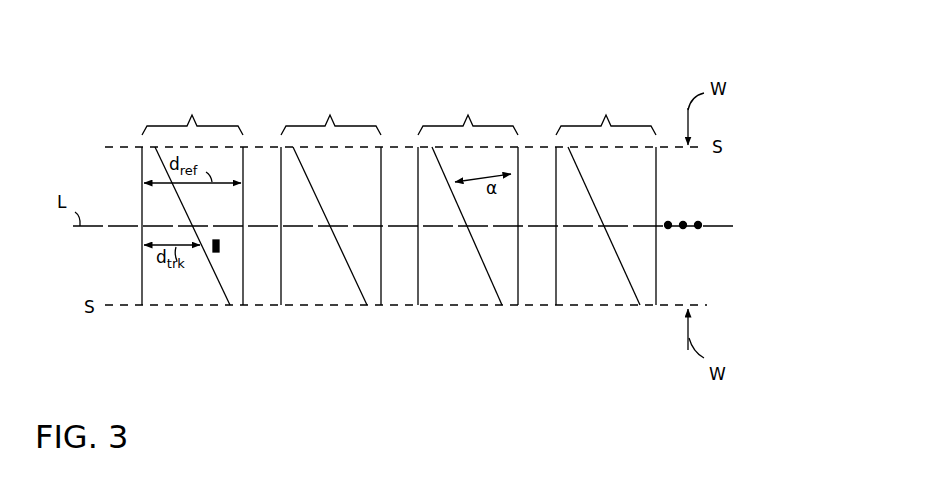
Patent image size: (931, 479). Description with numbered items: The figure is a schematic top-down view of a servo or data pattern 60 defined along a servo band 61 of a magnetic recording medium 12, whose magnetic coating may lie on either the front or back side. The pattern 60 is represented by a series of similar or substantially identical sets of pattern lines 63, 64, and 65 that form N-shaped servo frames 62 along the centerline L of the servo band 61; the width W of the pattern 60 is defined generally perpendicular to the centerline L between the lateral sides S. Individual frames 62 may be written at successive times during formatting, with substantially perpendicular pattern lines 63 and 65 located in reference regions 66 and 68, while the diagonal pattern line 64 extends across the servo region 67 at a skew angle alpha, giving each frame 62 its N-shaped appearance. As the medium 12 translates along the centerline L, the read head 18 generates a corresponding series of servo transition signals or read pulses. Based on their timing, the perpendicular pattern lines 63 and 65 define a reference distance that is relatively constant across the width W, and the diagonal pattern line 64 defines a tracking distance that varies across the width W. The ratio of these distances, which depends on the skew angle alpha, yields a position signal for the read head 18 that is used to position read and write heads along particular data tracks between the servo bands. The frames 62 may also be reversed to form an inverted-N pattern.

The magnetic recording medium 12 is at (34, 270).
The read head 18 is at (220, 248).
The servo or data pattern 60 is at (490, 64).
The servo band 61 is at (716, 282).
The servo frame 62 is at (135, 104).
The pattern line 63 is at (141, 198).
The diagonal pattern line 64 is at (186, 211).
The pattern line 65 is at (243, 280).
The reference region 66 is at (142, 311).
The servo region 67 is at (200, 306).
The reference region 68 is at (243, 311).